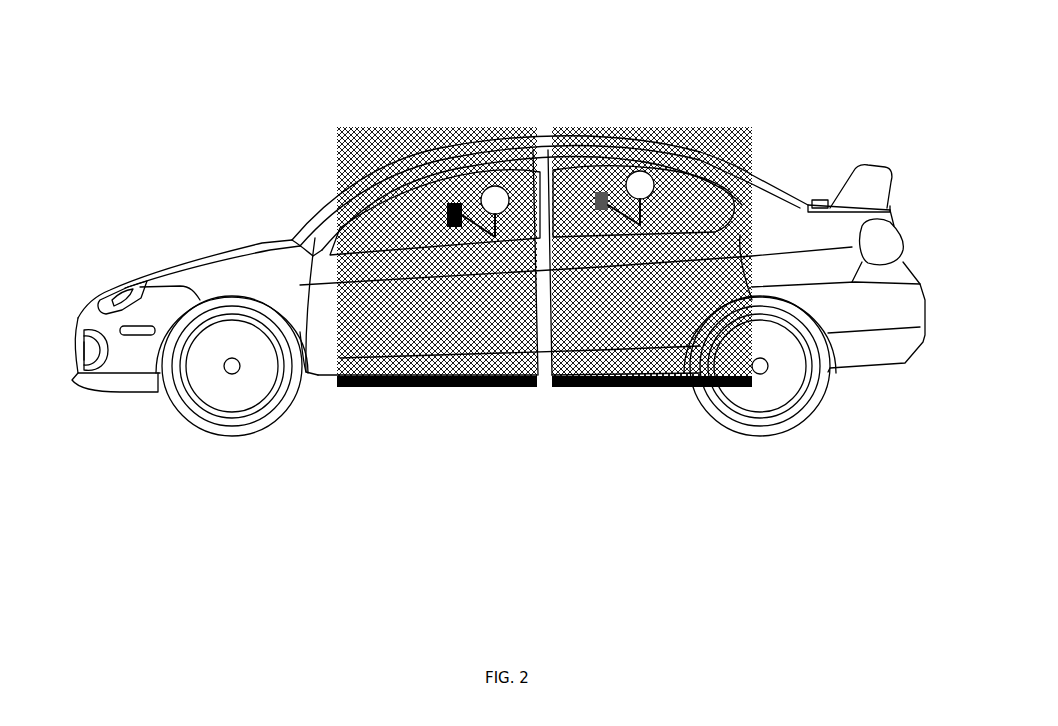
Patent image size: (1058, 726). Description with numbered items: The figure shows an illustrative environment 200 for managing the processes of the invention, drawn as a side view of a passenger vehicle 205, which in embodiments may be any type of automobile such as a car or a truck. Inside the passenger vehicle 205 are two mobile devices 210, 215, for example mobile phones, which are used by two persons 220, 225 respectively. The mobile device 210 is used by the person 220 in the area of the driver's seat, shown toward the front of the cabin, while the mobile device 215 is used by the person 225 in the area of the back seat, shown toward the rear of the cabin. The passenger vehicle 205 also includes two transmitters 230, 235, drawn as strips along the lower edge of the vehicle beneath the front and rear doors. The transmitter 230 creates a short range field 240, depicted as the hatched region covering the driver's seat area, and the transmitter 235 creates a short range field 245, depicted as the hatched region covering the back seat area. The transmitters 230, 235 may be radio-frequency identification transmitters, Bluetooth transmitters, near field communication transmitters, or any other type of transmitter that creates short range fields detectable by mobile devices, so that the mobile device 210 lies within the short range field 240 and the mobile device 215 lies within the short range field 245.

The environment 200 is at (182, 24).
The passenger vehicle 205 is at (218, 242).
The mobile device 210 is at (452, 205).
The mobile device 215 is at (597, 195).
The person 220 is at (492, 186).
The person 225 is at (637, 172).
The transmitter 230 is at (415, 388).
The transmitter 235 is at (603, 388).
The short range field 240 is at (350, 127).
The short range field 245 is at (557, 127).